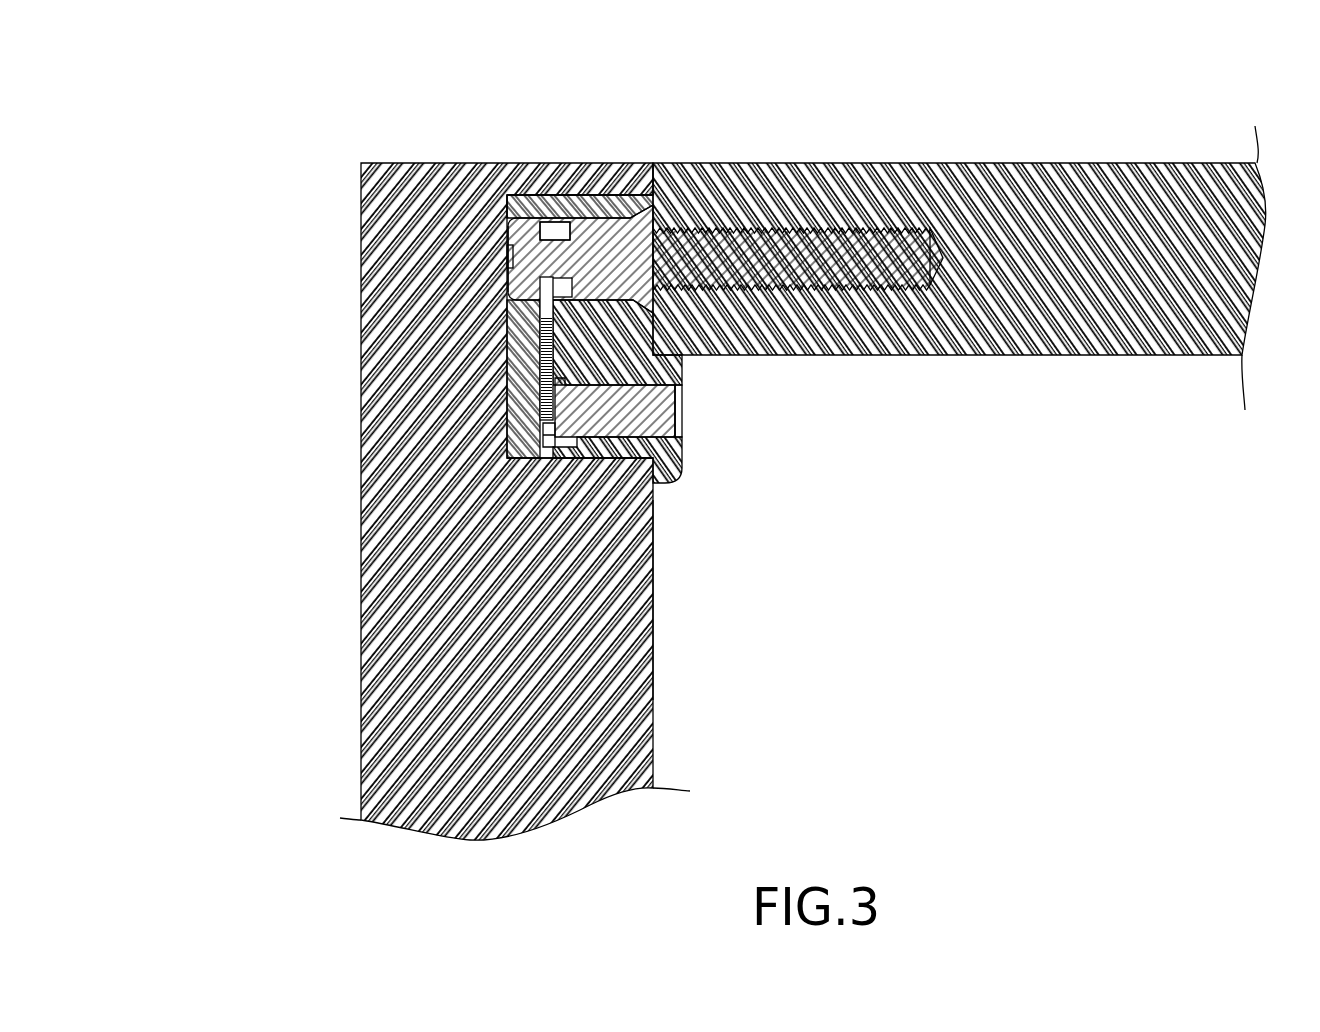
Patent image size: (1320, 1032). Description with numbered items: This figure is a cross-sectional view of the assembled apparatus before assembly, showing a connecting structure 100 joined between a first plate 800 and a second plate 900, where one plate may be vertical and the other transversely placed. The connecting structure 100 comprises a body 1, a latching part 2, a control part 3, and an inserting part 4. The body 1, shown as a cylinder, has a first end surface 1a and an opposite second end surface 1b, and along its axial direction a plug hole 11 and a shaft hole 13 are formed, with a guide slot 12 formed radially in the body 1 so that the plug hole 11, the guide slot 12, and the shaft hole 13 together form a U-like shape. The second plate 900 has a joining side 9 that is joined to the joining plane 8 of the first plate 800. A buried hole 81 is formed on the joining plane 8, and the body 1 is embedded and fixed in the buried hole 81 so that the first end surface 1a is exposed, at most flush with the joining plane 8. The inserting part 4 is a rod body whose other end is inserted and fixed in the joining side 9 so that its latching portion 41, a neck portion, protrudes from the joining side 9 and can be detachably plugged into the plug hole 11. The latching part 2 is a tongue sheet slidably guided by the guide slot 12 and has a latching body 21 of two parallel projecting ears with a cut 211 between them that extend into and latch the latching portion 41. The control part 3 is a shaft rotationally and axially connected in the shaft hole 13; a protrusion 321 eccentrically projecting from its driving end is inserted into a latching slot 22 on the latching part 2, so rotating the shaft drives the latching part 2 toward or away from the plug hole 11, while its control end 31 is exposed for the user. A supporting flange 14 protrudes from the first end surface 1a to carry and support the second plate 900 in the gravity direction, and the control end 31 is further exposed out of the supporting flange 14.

The connecting structure 100 is at (795, 456).
The first plate 800 is at (356, 362).
The second plate 900 is at (1009, 161).
The body 1 is at (582, 198).
The first end surface 1a is at (660, 210).
The second end surface 1b is at (508, 205).
The plug hole 11 is at (609, 194).
The guide slot 12 is at (544, 457).
The shaft hole 13 is at (683, 363).
The supporting flange 14 is at (676, 300).
The latching part 2 is at (531, 340).
The latching body 21 is at (507, 243).
The cut 211 is at (507, 268).
The latching slot 22 is at (541, 418).
The control part 3 is at (690, 430).
The control end 31 is at (683, 404).
The protrusion 321 is at (545, 442).
The inserting part 4 is at (812, 228).
The latching portion 41 is at (556, 220).
The joining plane 8 is at (655, 602).
The buried hole 81 is at (574, 215).
The joining side 9 is at (652, 190).